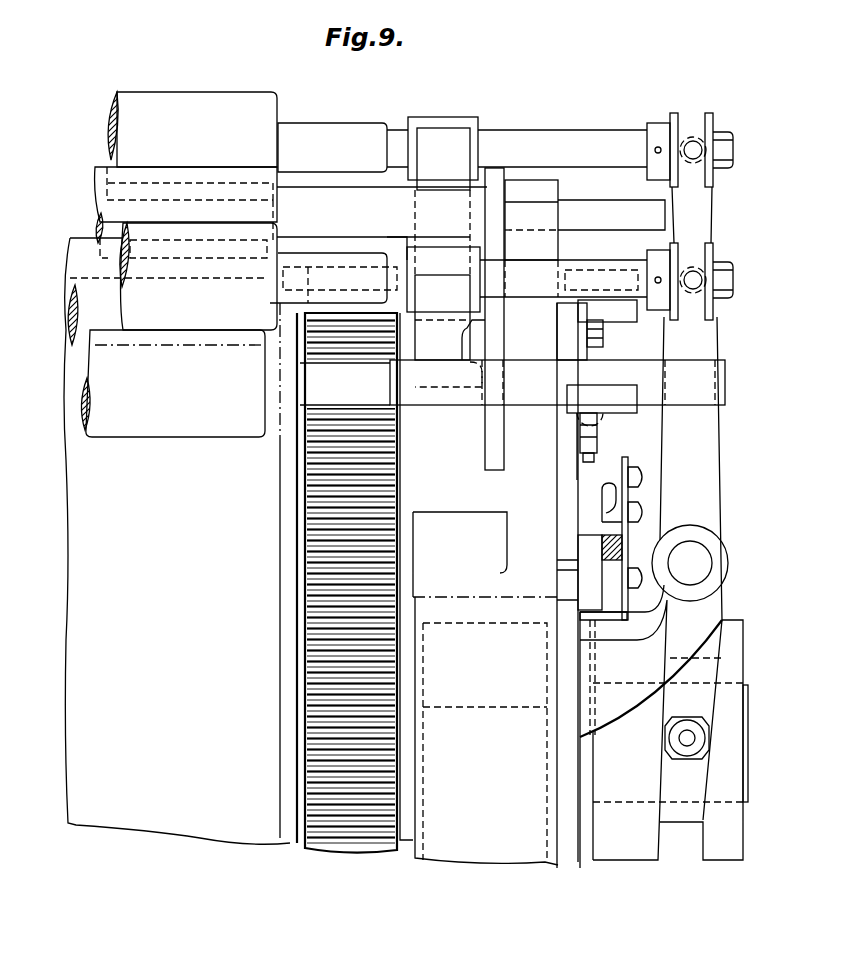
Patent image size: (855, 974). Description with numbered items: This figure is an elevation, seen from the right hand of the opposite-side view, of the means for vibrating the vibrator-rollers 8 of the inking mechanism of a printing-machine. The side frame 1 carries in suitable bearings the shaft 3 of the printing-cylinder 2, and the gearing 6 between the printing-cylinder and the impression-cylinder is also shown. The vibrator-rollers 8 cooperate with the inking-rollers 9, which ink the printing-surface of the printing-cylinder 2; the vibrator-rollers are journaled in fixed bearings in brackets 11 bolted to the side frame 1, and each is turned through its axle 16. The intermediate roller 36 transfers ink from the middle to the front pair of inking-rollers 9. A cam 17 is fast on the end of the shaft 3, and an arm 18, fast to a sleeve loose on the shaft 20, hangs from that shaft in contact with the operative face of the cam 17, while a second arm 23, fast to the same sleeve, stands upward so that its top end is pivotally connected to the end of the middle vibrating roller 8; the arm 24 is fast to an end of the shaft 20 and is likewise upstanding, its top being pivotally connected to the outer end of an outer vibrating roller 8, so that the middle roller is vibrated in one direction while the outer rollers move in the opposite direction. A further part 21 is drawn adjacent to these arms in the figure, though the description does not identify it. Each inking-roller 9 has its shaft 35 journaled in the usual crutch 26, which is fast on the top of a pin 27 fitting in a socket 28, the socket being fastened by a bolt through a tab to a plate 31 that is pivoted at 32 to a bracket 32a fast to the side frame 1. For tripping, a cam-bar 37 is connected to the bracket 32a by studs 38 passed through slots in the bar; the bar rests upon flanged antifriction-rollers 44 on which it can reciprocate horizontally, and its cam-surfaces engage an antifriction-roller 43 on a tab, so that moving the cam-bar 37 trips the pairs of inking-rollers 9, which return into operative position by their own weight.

The side frame 1 is at (485, 731).
The printing-cylinder 2 is at (180, 573).
The shaft 3 is at (748, 764).
The gearing 6 is at (323, 523).
The vibrator-roller 8 is at (173, 211).
The inking-roller 9 is at (165, 337).
The bracket 11 is at (444, 252).
The axle 16 is at (562, 213).
The cam 17 is at (668, 771).
The arm 18 is at (687, 726).
The shaft 20 is at (690, 563).
The bracket arm 21 is at (651, 726).
The second arm 23 is at (690, 216).
The arm 24 is at (701, 588).
The crutch 26 is at (597, 360).
The pin 27 is at (604, 338).
The socket 28 is at (617, 347).
The plate 31 is at (566, 491).
The pivot 32 is at (578, 440).
The bracket 32a is at (462, 514).
The shaft 35 is at (512, 362).
The intermediate roller 36 is at (186, 205).
The cam-bar 37 is at (600, 548).
The stud 38 is at (647, 473).
The antifriction-roller 43 is at (610, 525).
The flanged antifriction-roller 44 is at (568, 588).